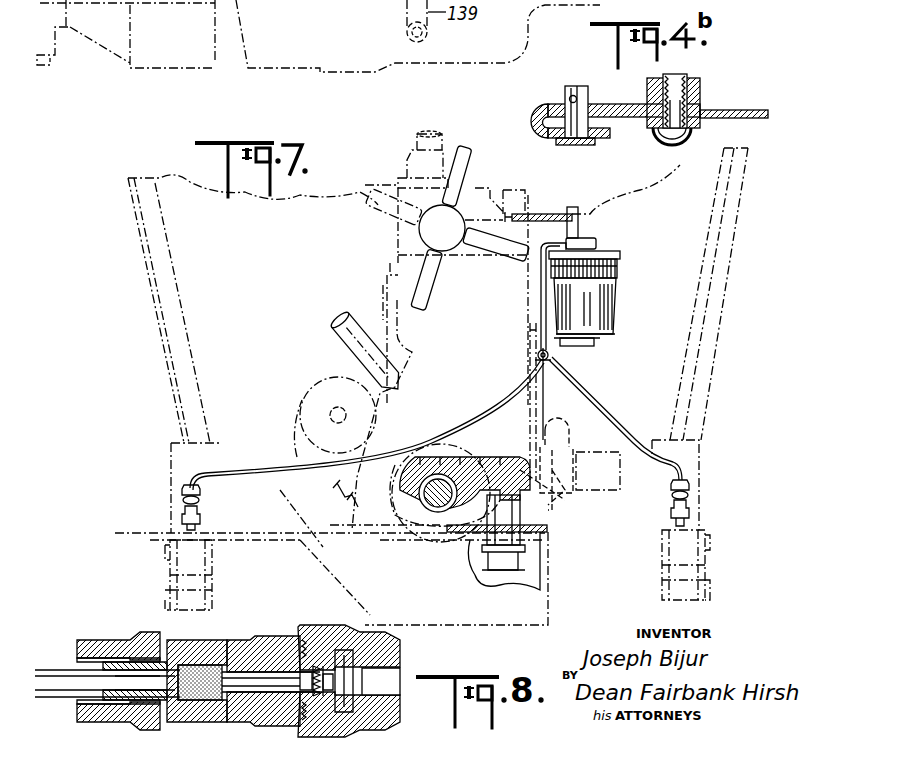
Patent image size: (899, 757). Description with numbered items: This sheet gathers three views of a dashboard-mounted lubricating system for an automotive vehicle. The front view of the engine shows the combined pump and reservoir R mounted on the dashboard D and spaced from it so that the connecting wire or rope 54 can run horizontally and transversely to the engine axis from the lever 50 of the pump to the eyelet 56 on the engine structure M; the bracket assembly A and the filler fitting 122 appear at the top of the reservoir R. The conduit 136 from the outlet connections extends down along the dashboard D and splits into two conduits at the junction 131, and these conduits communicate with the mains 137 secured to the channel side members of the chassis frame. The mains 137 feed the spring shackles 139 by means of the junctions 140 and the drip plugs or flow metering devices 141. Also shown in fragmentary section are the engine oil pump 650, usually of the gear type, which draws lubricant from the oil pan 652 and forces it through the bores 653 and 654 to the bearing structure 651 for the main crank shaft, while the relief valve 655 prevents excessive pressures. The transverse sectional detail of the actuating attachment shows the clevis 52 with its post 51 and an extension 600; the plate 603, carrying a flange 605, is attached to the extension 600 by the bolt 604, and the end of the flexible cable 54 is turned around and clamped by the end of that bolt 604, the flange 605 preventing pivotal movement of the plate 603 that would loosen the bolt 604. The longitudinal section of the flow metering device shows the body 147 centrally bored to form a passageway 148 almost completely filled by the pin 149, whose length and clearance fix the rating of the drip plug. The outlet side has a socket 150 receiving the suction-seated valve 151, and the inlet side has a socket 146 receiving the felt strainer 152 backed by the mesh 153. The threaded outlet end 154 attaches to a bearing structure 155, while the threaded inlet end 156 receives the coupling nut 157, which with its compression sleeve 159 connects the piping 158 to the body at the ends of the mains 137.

In FIG. 4B, the extension 600 is at (620, 104).
In FIG. 4B, the lever 50 is at (531, 118).
In FIG. 7, the lever 50 is at (578, 204).
In FIG. 4B, the post 51 is at (568, 145).
In FIG. 4B, the clevis 52 is at (600, 139).
In FIG. 4B, the connecting wire or rope 54 is at (757, 118).
In FIG. 4B, the plate 603 is at (700, 125).
In FIG. 4B, the bolt 604 is at (684, 80).
In FIG. 4B, the flange 605 is at (655, 126).
In FIG. 7, the eyelet 56 is at (525, 213).
In FIG. 7, the bracket assembly A is at (548, 212).
In FIG. 7, the engine structure M is at (395, 193).
In FIG. 7, the dashboard D is at (180, 262).
In FIG. 7, the pump and reservoir R is at (612, 293).
In FIG. 7, the filler pipe 122 is at (580, 226).
In FIG. 7, the conduit 136 is at (555, 355).
In FIG. 7, the junction 131 is at (549, 401).
In FIG. 7, the mains 137 is at (186, 492).
In FIG. 7, the junctions 140 is at (184, 504).
In FIG. 7, the drip plugs or flow metering devices 141 is at (183, 523).
In FIG. 7, the spring shackles 139 is at (213, 567).
In FIG. 7, the bore 654 is at (473, 458).
In FIG. 7, the bearing structure 651 is at (436, 510).
In FIG. 7, the engine oil pump 650 is at (513, 556).
In FIG. 7, the oil pan 652 is at (535, 607).
In FIG. 7, the bore 653 is at (562, 506).
In FIG. 7, the relief valve 655 is at (560, 466).
In FIG. 8, the socket 146 is at (198, 665).
In FIG. 8, the body 147 is at (265, 640).
In FIG. 8, the passageway 148 is at (305, 635).
In FIG. 8, the pin 149 is at (222, 723).
In FIG. 8, the socket 150 is at (322, 668).
In FIG. 8, the valve 151 is at (335, 690).
In FIG. 8, the felt strainer 152 is at (146, 640).
In FIG. 8, the mesh 153 is at (222, 642).
In FIG. 8, the outlet end 154 is at (338, 650).
In FIG. 8, the bearing structure 155 is at (398, 665).
In FIG. 8, the inlet end 156 is at (135, 705).
In FIG. 8, the coupling nut 157 is at (112, 640).
In FIG. 8, the piping 158 is at (47, 670).
In FIG. 8, the compression sleeve 159 is at (115, 692).